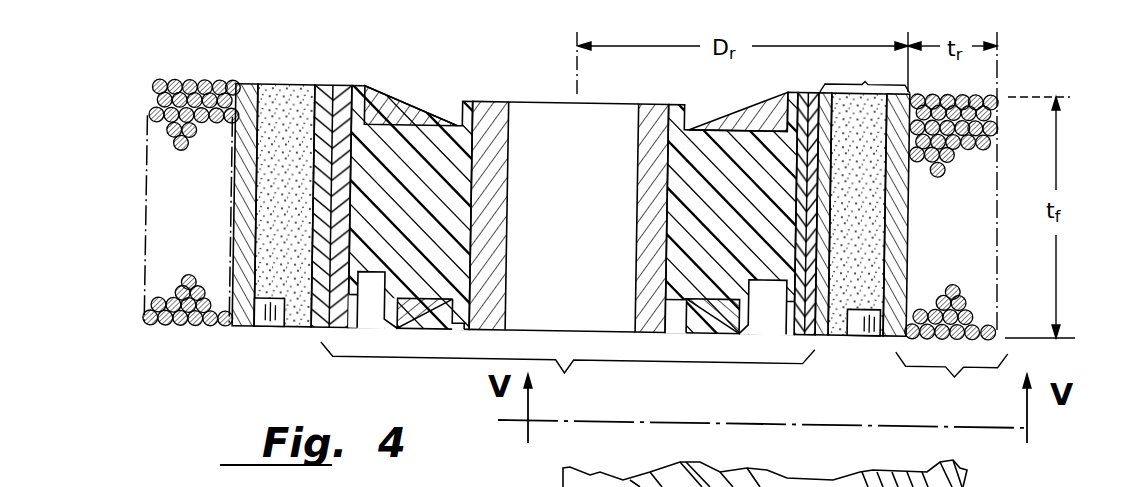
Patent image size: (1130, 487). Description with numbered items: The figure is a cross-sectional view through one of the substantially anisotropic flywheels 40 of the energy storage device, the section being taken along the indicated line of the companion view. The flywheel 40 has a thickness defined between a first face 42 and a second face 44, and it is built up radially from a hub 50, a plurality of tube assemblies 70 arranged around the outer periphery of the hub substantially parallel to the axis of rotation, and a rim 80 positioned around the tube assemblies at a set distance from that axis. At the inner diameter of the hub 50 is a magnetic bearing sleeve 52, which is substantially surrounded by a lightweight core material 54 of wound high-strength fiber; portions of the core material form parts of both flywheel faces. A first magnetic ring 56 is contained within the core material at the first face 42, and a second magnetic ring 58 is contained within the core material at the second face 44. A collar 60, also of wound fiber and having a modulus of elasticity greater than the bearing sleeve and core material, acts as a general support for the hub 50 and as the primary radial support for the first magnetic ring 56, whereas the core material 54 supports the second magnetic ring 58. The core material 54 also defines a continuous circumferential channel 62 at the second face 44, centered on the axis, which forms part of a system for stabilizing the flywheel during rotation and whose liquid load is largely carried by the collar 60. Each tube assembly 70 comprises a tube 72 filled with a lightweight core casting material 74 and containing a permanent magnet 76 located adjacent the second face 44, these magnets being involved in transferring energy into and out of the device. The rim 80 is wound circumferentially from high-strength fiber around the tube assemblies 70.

The flywheel 40 is at (153, 87).
The first face 42 is at (203, 82).
The second face 44 is at (197, 326).
The hub 50 is at (569, 244).
The magnetic bearing sleeve 52 is at (492, 125).
The core material 54 is at (410, 158).
The first magnetic ring 56 is at (763, 118).
The second magnetic ring 58 is at (720, 318).
The collar 60 is at (325, 329).
The channel 62 is at (375, 312).
The tube assembly 70 is at (862, 193).
The tube 72 is at (246, 90).
The core casting material 74 is at (290, 100).
The permanent magnet 76 is at (870, 330).
The rim 80 is at (953, 251).